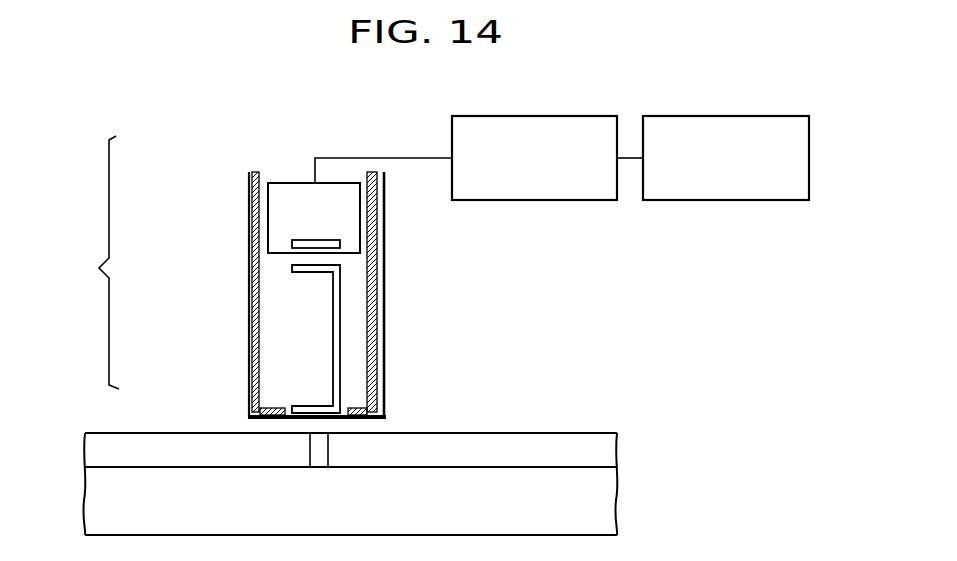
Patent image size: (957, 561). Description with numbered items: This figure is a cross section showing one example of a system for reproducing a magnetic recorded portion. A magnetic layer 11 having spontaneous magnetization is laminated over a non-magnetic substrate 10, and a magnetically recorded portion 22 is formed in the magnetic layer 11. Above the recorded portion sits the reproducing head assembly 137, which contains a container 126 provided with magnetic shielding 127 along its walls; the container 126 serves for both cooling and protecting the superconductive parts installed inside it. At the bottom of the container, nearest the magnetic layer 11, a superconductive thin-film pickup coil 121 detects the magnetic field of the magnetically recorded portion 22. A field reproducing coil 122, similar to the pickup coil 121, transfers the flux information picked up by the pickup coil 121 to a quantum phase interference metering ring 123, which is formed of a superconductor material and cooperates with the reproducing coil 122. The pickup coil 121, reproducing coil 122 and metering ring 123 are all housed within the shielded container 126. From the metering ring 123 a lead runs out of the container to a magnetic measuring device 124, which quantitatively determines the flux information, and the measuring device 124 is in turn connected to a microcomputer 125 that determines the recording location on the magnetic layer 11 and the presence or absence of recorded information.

The magnetic head assembly 137 is at (82, 262).
The magnetic shielding 127 is at (249, 190).
The container 126 is at (386, 340).
The quantum phase interference metering ring 123 is at (292, 243).
The field reproducing coil 122 is at (313, 273).
The superconductive thin-film pickup coil 121 is at (298, 405).
The magnetic measuring device 124 is at (530, 200).
The microcomputer 125 is at (722, 200).
The magnetic layer 11 is at (617, 452).
The non-magnetic substrate 10 is at (617, 507).
The magnetically recorded portion 22 is at (320, 467).